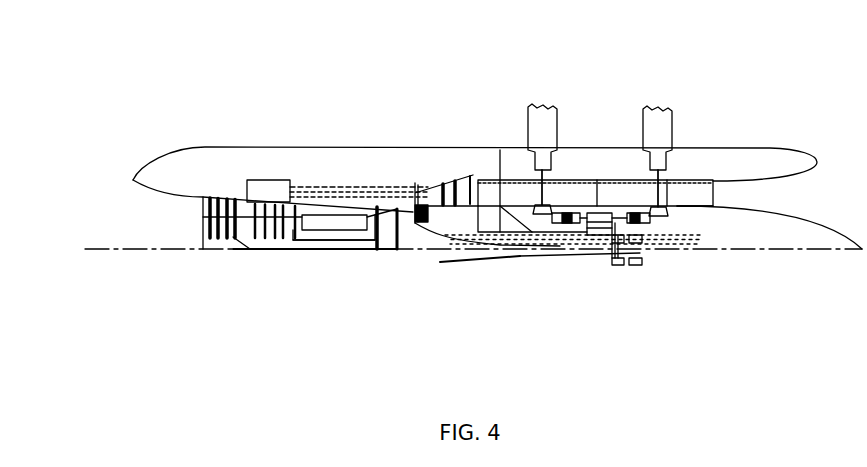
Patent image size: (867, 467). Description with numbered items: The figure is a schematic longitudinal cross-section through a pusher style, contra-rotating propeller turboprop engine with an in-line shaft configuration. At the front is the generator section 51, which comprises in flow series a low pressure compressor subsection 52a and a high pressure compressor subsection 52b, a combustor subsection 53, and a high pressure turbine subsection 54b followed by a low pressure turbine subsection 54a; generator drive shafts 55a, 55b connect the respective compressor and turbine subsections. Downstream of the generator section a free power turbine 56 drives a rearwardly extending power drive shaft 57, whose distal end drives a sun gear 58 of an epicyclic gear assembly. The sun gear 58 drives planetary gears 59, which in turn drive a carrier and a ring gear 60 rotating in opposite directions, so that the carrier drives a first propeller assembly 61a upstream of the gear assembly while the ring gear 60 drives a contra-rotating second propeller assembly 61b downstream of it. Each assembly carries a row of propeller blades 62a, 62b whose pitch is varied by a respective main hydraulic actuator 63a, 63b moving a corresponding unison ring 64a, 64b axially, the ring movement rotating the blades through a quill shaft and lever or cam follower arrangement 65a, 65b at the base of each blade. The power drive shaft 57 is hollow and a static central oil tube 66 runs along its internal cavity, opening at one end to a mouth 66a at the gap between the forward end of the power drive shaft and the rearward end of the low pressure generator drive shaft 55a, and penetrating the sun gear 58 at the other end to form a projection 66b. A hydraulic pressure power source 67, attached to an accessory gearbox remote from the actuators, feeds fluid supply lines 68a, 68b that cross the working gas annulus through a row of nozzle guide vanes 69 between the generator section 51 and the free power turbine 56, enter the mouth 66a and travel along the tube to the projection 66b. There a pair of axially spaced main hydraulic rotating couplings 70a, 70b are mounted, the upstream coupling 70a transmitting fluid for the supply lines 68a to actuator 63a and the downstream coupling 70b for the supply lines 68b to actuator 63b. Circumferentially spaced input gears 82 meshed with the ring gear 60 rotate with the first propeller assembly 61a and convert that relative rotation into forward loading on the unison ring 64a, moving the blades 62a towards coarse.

The generator section 51 is at (278, 334).
The low pressure compressor subsection 52a is at (213, 240).
The high pressure compressor subsection 52b is at (262, 240).
The combustor subsection 53 is at (326, 231).
The low pressure turbine subsection 54a is at (398, 250).
The high pressure turbine subsection 54b is at (378, 250).
The low pressure generator drive shaft 55a is at (300, 252).
The high pressure generator drive shaft 55b is at (335, 241).
The free power turbine 56 is at (437, 178).
The power drive shaft 57 is at (495, 232).
The sun gear 58 is at (616, 259).
The planetary gears 59 is at (598, 236).
The ring gear 60 is at (599, 206).
The first propeller assembly 61a is at (543, 70).
The second propeller assembly 61b is at (711, 107).
The propeller blades 62a is at (528, 106).
The propeller blades 62b is at (663, 107).
The main hydraulic actuator 63a is at (565, 224).
The main hydraulic actuator 63b is at (648, 224).
The unison ring 64a is at (500, 252).
The unison ring 64b is at (700, 208).
The quill shaft and lever or cam follower arrangement 65a is at (540, 206).
The quill shaft and lever or cam follower arrangement 65b is at (637, 207).
The central oil tube 66 is at (553, 258).
The mouth 66a is at (450, 263).
The projection 66b is at (602, 257).
The hydraulic pressure power source 67 is at (256, 180).
The fluid supply lines 68a is at (363, 191).
The fluid supply lines 68b is at (317, 186).
The nozzle guide vanes 69 is at (420, 185).
The upstream main hydraulic rotating coupling 70a is at (632, 266).
The downstream main hydraulic rotating coupling 70b is at (635, 244).
The input gears 82 is at (500, 150).